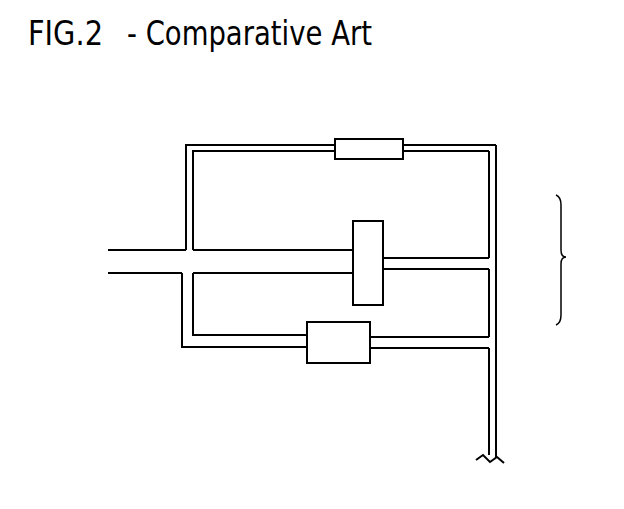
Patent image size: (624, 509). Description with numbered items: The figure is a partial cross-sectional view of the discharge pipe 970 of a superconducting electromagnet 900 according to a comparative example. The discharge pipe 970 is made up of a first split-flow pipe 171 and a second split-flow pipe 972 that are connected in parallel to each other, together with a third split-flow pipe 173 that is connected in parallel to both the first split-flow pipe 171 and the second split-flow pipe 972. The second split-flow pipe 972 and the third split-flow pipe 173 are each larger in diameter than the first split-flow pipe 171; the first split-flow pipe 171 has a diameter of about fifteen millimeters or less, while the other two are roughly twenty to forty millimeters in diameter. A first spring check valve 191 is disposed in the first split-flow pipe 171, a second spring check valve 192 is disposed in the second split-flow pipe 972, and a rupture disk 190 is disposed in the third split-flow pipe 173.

The superconducting electromagnet 900 is at (537, 121).
The first spring check valve 191 is at (367, 139).
The rupture disk 190 is at (368, 221).
The second spring check valve 192 is at (322, 322).
The first split-flow pipe 171 is at (498, 205).
The third split-flow pipe 173 is at (448, 258).
The second split-flow pipe 972 is at (448, 337).
The discharge pipe 970 is at (580, 260).